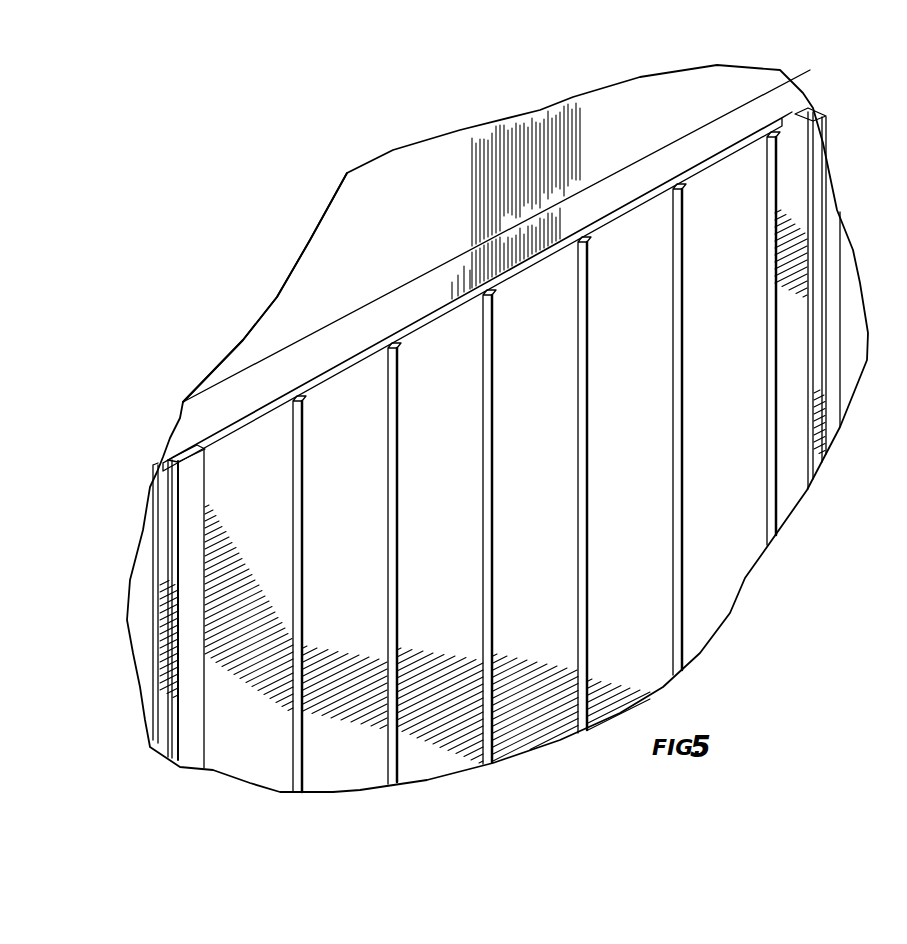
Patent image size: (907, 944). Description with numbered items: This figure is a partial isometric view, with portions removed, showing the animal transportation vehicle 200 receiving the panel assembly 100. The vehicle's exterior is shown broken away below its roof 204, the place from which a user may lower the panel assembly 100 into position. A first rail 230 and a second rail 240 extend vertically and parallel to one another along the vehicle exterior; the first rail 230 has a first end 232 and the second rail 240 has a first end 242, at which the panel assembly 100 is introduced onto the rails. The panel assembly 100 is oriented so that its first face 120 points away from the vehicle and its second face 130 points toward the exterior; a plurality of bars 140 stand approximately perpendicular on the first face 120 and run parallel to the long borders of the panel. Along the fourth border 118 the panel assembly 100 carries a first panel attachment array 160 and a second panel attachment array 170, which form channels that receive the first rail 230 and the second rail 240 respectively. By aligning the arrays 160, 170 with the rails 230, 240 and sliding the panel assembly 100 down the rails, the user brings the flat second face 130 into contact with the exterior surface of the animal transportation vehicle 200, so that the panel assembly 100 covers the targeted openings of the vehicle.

The panel assembly 100 is at (325, 755).
The fourth border 118 is at (423, 315).
The first face 120 is at (663, 649).
The second face 130 is at (443, 288).
The bars 140 is at (486, 741).
The first panel attachment array 160 is at (184, 436).
The second panel attachment array 170 is at (770, 120).
The animal transportation vehicle 200 is at (646, 112).
The roof 204 is at (274, 318).
The first rail 230 is at (160, 477).
The first end 232 is at (163, 463).
The second rail 240 is at (806, 127).
The first end 242 is at (803, 111).